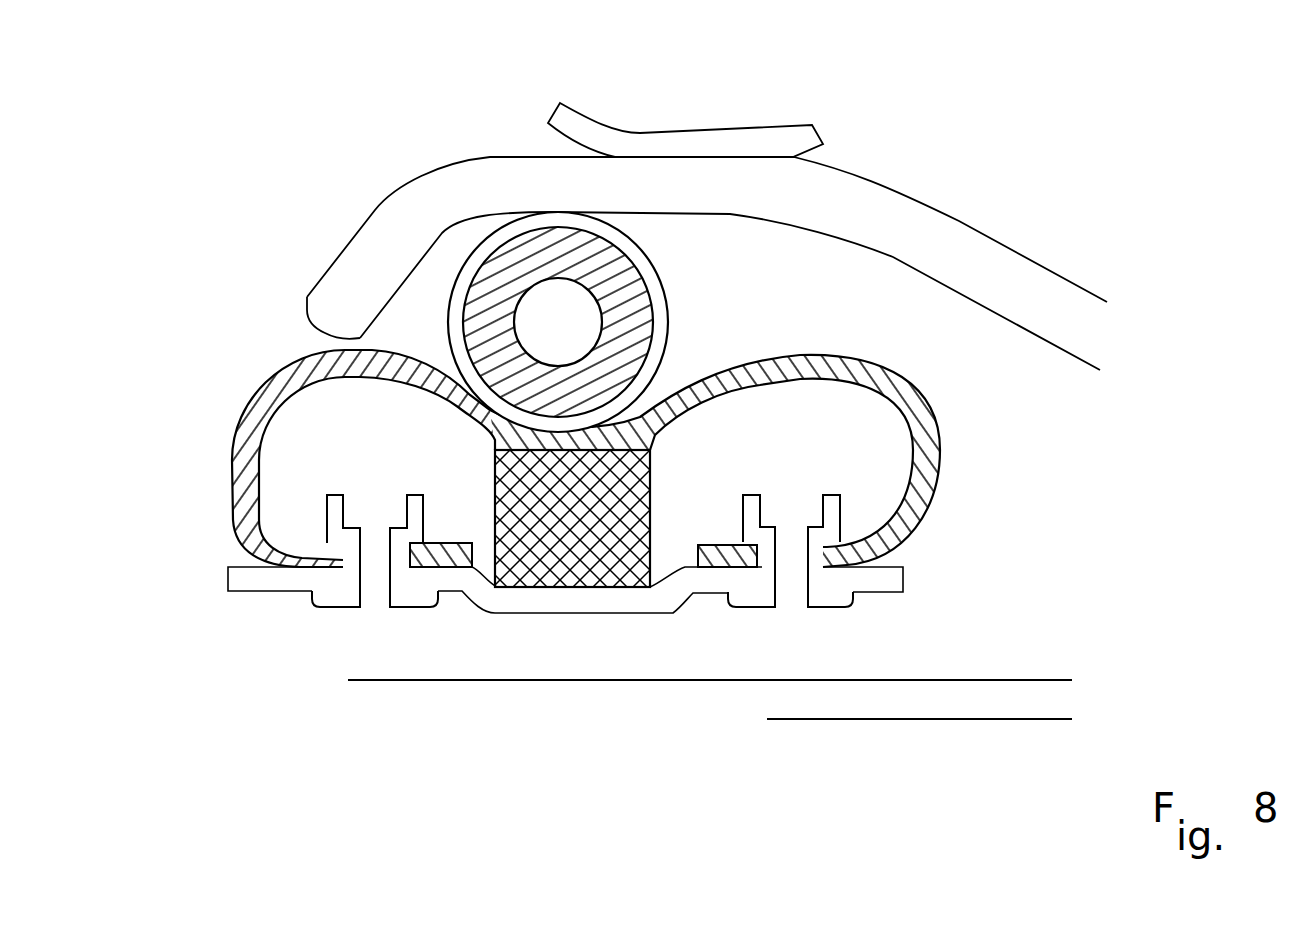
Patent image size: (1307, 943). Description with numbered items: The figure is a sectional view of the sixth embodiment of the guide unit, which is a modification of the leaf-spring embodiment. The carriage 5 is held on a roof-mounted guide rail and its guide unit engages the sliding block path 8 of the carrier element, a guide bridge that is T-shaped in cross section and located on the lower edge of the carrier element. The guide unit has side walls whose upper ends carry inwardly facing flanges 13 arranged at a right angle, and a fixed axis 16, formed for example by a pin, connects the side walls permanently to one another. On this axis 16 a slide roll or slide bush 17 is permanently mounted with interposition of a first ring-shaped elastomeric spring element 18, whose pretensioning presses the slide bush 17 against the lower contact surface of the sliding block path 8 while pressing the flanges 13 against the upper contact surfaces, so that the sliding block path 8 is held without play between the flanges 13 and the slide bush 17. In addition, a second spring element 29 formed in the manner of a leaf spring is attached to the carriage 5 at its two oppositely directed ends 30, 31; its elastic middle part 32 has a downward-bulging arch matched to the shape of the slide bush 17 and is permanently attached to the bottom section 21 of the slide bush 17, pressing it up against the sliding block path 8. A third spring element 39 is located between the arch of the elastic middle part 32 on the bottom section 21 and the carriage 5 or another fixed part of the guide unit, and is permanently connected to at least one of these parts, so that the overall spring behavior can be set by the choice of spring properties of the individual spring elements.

The carriage 5 is at (493, 593).
The sliding block path 8 is at (871, 214).
The flanges 13 is at (745, 147).
The axis 16 is at (556, 322).
The slide bush 17 is at (463, 250).
The first spring element 18 is at (492, 308).
The bottom section 21 is at (570, 418).
The second spring element 29 is at (252, 407).
The end 30 is at (743, 547).
The end 31 is at (433, 550).
The elastic middle part 32 is at (580, 440).
The third spring element 39 is at (556, 540).